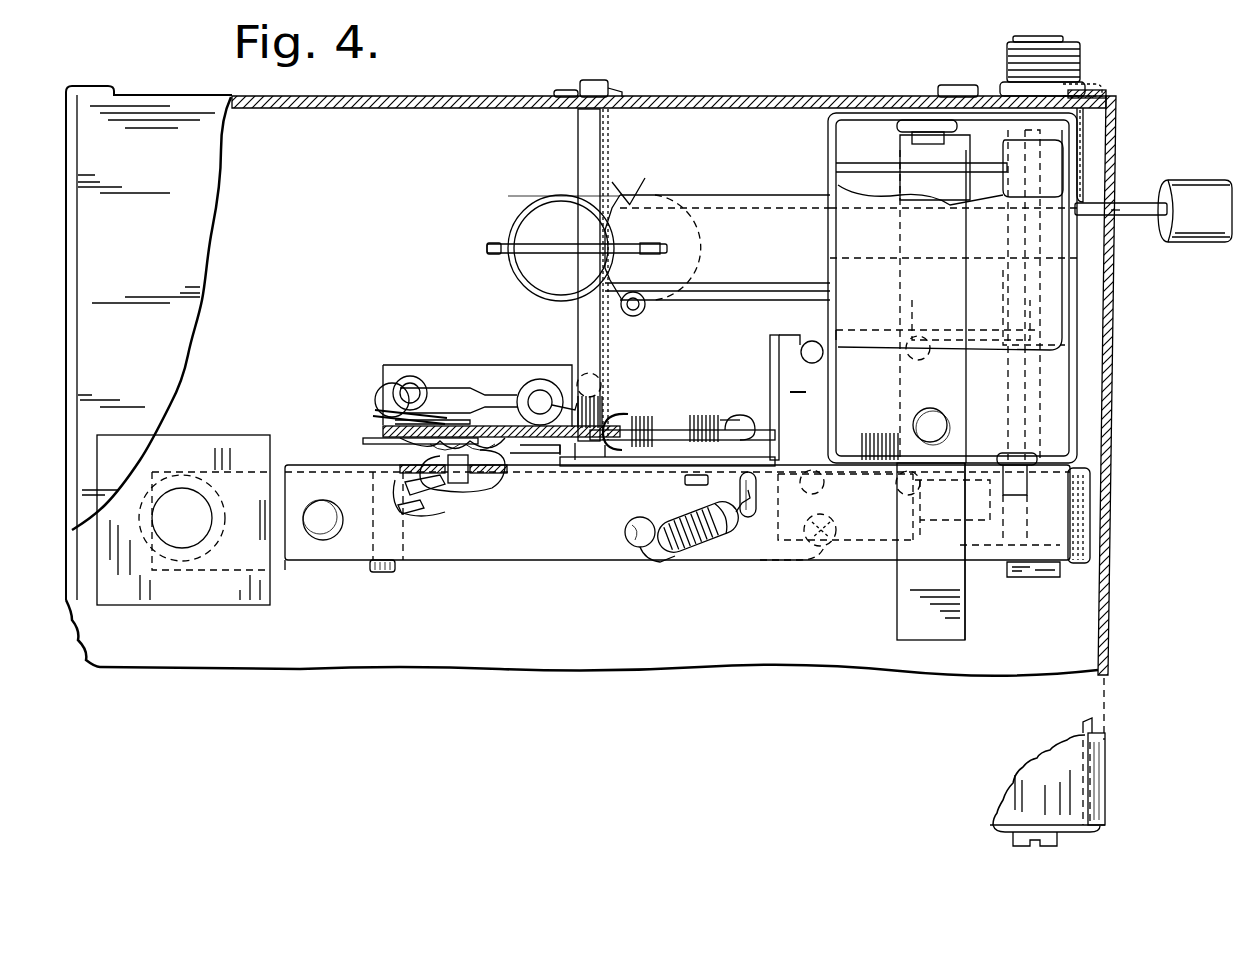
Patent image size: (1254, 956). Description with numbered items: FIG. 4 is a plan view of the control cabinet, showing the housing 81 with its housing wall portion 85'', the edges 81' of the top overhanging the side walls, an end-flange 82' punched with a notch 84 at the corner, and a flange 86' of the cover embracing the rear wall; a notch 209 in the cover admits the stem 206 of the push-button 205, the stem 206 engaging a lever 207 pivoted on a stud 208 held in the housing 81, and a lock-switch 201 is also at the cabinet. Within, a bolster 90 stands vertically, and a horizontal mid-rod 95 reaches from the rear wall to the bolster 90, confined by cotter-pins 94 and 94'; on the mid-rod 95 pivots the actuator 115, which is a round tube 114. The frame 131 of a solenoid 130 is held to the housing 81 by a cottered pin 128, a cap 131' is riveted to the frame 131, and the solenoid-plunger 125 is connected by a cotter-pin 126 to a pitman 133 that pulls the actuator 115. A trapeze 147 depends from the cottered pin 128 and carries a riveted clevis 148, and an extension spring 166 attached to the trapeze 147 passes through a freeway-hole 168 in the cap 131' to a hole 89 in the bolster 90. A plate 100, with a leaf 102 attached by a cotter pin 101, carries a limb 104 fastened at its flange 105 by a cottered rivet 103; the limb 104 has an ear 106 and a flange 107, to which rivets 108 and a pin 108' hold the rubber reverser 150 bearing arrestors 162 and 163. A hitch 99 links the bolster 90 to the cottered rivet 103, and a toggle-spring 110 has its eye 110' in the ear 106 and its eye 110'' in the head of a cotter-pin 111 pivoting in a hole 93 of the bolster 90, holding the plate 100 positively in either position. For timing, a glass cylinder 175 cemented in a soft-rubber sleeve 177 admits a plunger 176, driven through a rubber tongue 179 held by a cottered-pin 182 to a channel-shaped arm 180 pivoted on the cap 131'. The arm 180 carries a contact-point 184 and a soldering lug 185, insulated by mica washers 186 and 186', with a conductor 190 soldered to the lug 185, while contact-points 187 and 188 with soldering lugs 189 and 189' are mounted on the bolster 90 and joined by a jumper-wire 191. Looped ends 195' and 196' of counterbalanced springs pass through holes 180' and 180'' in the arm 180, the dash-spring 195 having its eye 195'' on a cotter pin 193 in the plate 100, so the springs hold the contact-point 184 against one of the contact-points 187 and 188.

The housing 81 is at (609, 402).
The housing wall portion 85'' is at (149, 284).
The cotter-pin 94 is at (572, 249).
The mid-rod 95 is at (615, 60).
The round tube 114 is at (520, 298).
The actuator 115 is at (557, 187).
The pitman 133 is at (487, 250).
The solenoid-plunger 125 is at (757, 212).
The cotter-pin 126 is at (636, 315).
The frame 131 is at (927, 262).
The lever 207 is at (860, 168).
The trapeze 147 is at (905, 200).
The clevis 148 is at (960, 258).
The reverser 150 is at (858, 330).
The solenoid 130 is at (1046, 355).
The arrestor 163 is at (915, 360).
The freeway-hole 168 is at (838, 425).
The extension spring 166 is at (860, 445).
The cap 131' is at (1016, 493).
The arrestor 162 is at (936, 488).
The stud 208 is at (958, 85).
The cottered pin 128 is at (922, 97).
The flange 86' is at (1108, 75).
The lock-switch 201 is at (1088, 135).
The stem 206 is at (1135, 200).
The push-button 205 is at (1200, 235).
The notch 209 is at (1118, 222).
The sleeve 177 is at (225, 612).
The plunger 176 is at (183, 540).
The cylinder 175 is at (190, 485).
The arm 180 is at (687, 535).
The rubber tongue 179 is at (285, 562).
The cottered-pin 182 is at (330, 540).
The conductor 190 is at (375, 573).
The cotter-pin 111 is at (468, 398).
The eye 110'' is at (551, 374).
The hole 93 is at (450, 425).
The soldering lug 189 is at (416, 367).
The soldering lug 189' is at (363, 388).
The jumper-wire 191 is at (385, 395).
The bolster 90 is at (375, 428).
The contact-point 188 is at (375, 445).
The contact-point 187 is at (498, 437).
The mica washer 186 is at (407, 483).
The contact-point 184 is at (480, 490).
The mica washer 186' is at (436, 514).
The soldering lug 185 is at (428, 512).
The hitch 99 is at (545, 455).
The cottered rivet 103 is at (770, 425).
The leaf 102 is at (672, 468).
The cotter pin 101 is at (692, 486).
The plate 100 is at (607, 470).
The cotter-pin 94' is at (560, 479).
The hole 89 is at (578, 480).
The toggle-spring 110 is at (635, 396).
The ear 106 is at (712, 416).
The flange 105 is at (752, 425).
The eye 110' is at (720, 390).
The flange 107 is at (801, 379).
The pin 108' is at (775, 351).
The rivet 108 is at (860, 484).
The limb 104 is at (760, 345).
The dash-spring 195 is at (698, 551).
The hole 180' is at (627, 565).
The looped end 195' is at (659, 580).
The cotter pin 193 is at (745, 520).
The eye 195'' is at (766, 546).
The looped end 196' is at (809, 575).
The hole 180'' is at (848, 536).
The edge 81' is at (1074, 779).
The end-flange 82' is at (1026, 850).
The notch 84 is at (1092, 826).